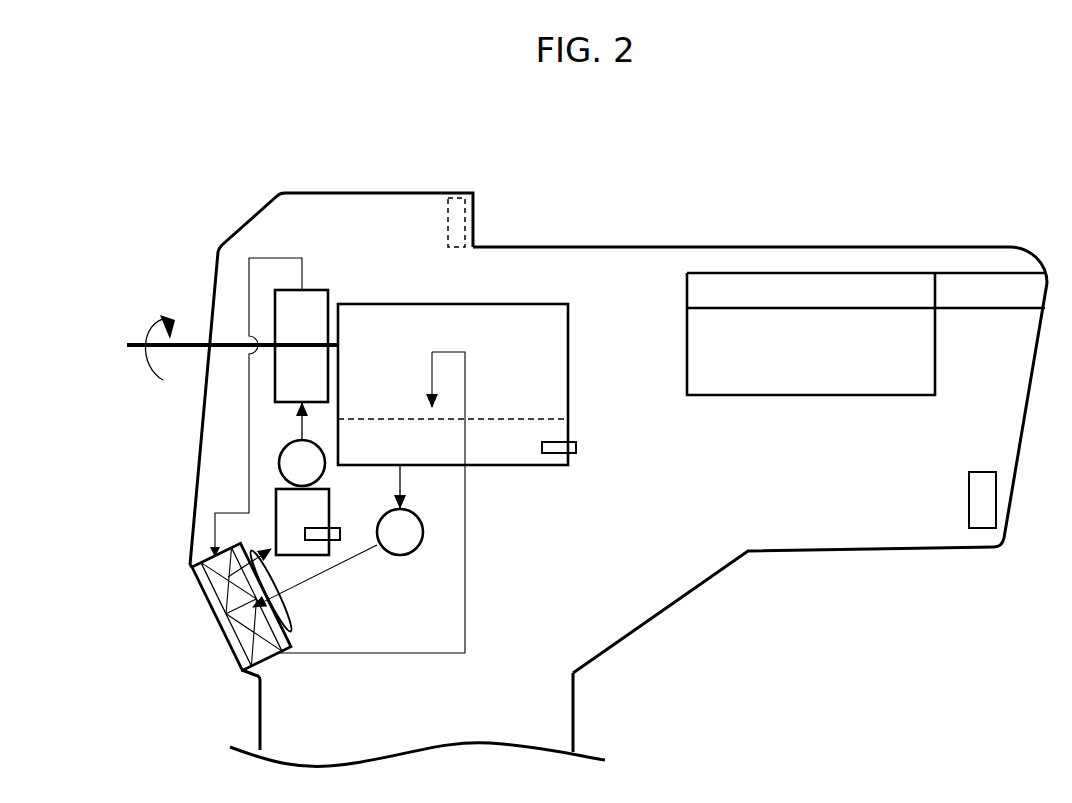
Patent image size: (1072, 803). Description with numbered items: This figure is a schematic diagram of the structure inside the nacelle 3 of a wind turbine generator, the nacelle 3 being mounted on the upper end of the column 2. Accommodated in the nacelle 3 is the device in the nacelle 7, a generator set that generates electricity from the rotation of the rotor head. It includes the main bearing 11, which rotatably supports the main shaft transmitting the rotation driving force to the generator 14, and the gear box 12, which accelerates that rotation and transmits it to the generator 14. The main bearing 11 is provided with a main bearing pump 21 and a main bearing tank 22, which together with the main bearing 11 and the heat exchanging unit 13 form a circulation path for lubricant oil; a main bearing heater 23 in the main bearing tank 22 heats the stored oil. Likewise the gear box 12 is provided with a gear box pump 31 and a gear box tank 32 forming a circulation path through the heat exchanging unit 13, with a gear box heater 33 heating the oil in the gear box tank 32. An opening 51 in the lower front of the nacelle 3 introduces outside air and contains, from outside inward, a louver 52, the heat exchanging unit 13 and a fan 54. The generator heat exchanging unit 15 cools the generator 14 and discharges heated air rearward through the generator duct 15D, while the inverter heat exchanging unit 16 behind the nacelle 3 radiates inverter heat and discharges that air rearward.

The column 2 is at (575, 721).
The nacelle 3 is at (909, 243).
The device in the nacelle 7 is at (655, 218).
The main bearing 11 is at (318, 290).
The gear box 12 is at (568, 343).
The heat exchanging unit 13 is at (240, 627).
The generator 14 is at (935, 350).
The generator heat exchanging unit 15 is at (812, 283).
The generator duct 15D is at (1005, 285).
The inverter heat exchanging unit 16 is at (969, 507).
The main bearing pump 21 is at (283, 465).
The main bearing tank 22 is at (317, 557).
The main bearing heater 23 is at (333, 527).
The gear box pump 31 is at (420, 555).
The gear box tank 32 is at (507, 465).
The gear box heater 33 is at (576, 450).
The opening 51 is at (192, 565).
The louver 52 is at (203, 585).
The fan 54 is at (295, 627).